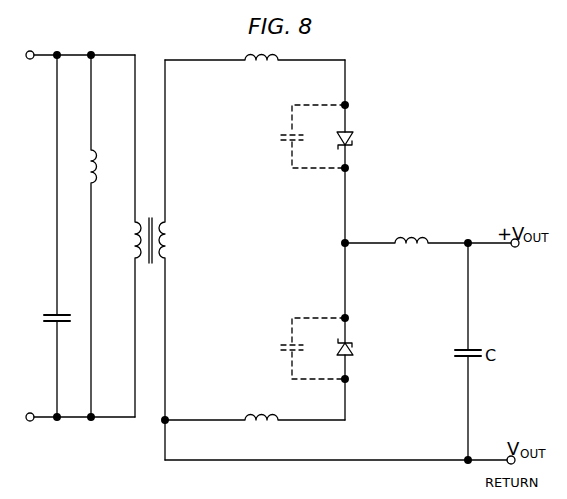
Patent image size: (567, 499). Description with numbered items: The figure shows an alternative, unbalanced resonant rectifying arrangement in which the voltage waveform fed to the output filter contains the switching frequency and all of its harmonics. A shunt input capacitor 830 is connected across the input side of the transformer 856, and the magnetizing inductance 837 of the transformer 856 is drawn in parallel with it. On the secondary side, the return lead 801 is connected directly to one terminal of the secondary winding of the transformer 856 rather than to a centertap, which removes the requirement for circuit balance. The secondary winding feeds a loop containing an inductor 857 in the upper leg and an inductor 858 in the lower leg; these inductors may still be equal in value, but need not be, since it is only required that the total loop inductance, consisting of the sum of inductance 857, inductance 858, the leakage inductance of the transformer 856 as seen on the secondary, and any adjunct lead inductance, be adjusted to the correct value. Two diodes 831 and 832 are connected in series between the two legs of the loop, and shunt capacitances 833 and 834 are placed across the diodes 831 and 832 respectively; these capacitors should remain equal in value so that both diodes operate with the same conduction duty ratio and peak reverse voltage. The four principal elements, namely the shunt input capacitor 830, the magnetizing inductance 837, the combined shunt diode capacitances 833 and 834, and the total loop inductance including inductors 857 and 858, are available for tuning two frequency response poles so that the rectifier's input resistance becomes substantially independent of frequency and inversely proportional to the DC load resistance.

The transformer 856 is at (173, 45).
The magnetizing inductance 837 is at (112, 236).
The shunt input capacitor 830 is at (43, 236).
The inductor 857 is at (255, 74).
The shunt diode capacitance 833 is at (296, 136).
The diode 831 is at (362, 142).
The shunt diode capacitance 834 is at (296, 348).
The diode 832 is at (361, 350).
The inductor 858 is at (255, 405).
The return lead 801 is at (373, 460).